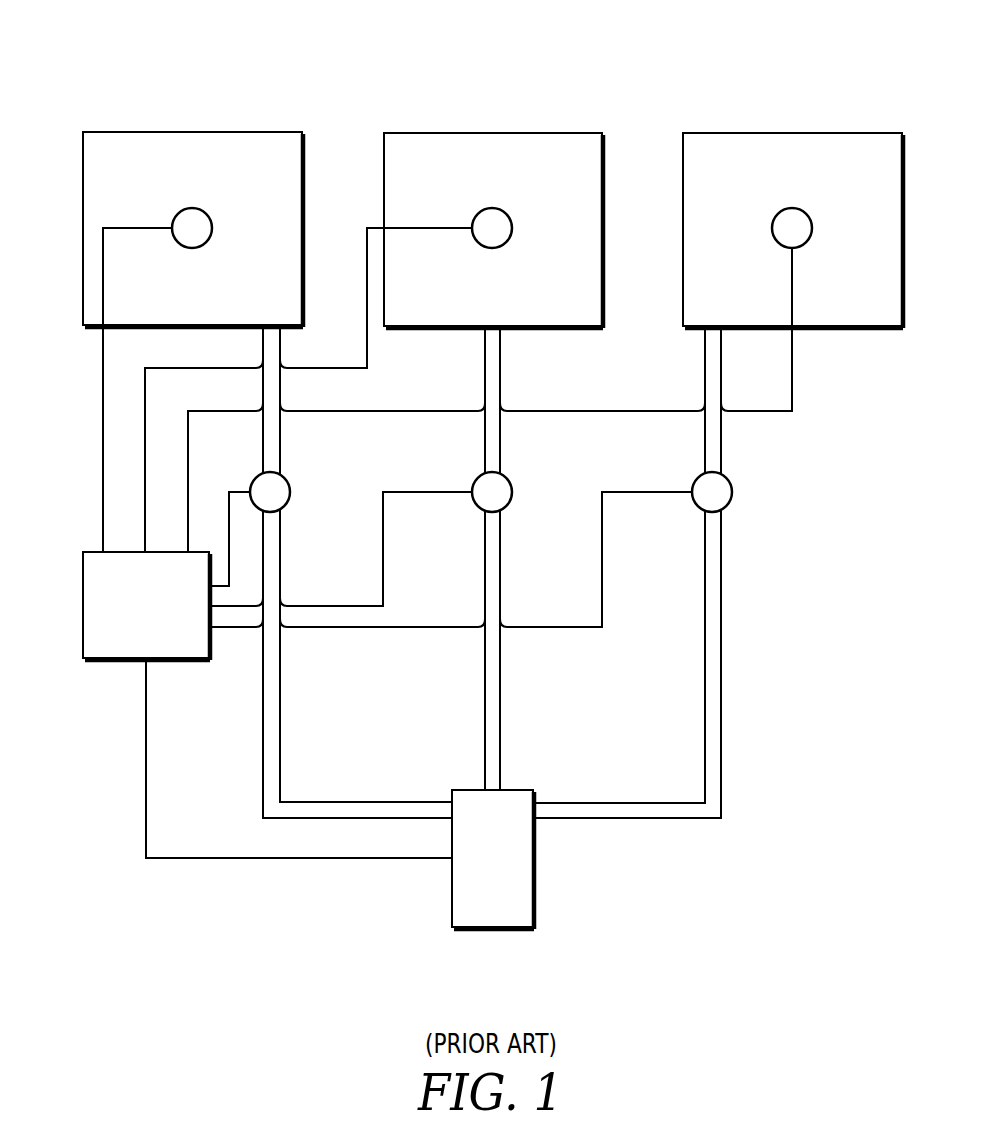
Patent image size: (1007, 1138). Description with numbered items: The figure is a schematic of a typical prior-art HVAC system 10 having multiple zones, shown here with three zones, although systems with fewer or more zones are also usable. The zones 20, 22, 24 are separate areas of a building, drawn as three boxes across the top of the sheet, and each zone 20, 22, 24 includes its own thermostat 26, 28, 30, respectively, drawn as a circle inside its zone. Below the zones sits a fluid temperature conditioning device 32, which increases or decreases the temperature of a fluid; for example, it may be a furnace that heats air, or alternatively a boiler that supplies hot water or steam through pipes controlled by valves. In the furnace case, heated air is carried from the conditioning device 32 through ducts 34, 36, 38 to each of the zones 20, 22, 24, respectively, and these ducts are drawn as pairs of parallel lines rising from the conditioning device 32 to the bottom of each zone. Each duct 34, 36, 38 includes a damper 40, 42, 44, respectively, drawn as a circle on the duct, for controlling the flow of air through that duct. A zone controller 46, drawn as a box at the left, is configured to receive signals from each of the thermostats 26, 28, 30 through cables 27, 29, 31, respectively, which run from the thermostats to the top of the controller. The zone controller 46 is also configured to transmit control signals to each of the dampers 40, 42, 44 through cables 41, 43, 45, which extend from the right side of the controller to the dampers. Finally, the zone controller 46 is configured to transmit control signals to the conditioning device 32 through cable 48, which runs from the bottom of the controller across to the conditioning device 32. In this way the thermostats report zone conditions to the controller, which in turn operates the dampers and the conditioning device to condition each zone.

The HVAC system 10 is at (138, 48).
The zone 20 is at (283, 132).
The zone 22 is at (583, 133).
The zone 24 is at (883, 133).
The thermostat 26 is at (193, 207).
The cable 27 is at (102, 429).
The thermostat 28 is at (493, 207).
The cable 29 is at (323, 365).
The thermostat 30 is at (793, 207).
The cable 31 is at (611, 409).
The fluid temperature conditioning device 32 is at (517, 789).
The duct 34 is at (281, 717).
The duct 36 is at (501, 717).
The duct 38 is at (722, 717).
The damper 40 is at (292, 492).
The cable 41 is at (243, 489).
The damper 42 is at (513, 492).
The cable 43 is at (429, 489).
The damper 44 is at (733, 492).
The cable 45 is at (649, 489).
The zone controller 46 is at (83, 606).
The cable 48 is at (299, 860).